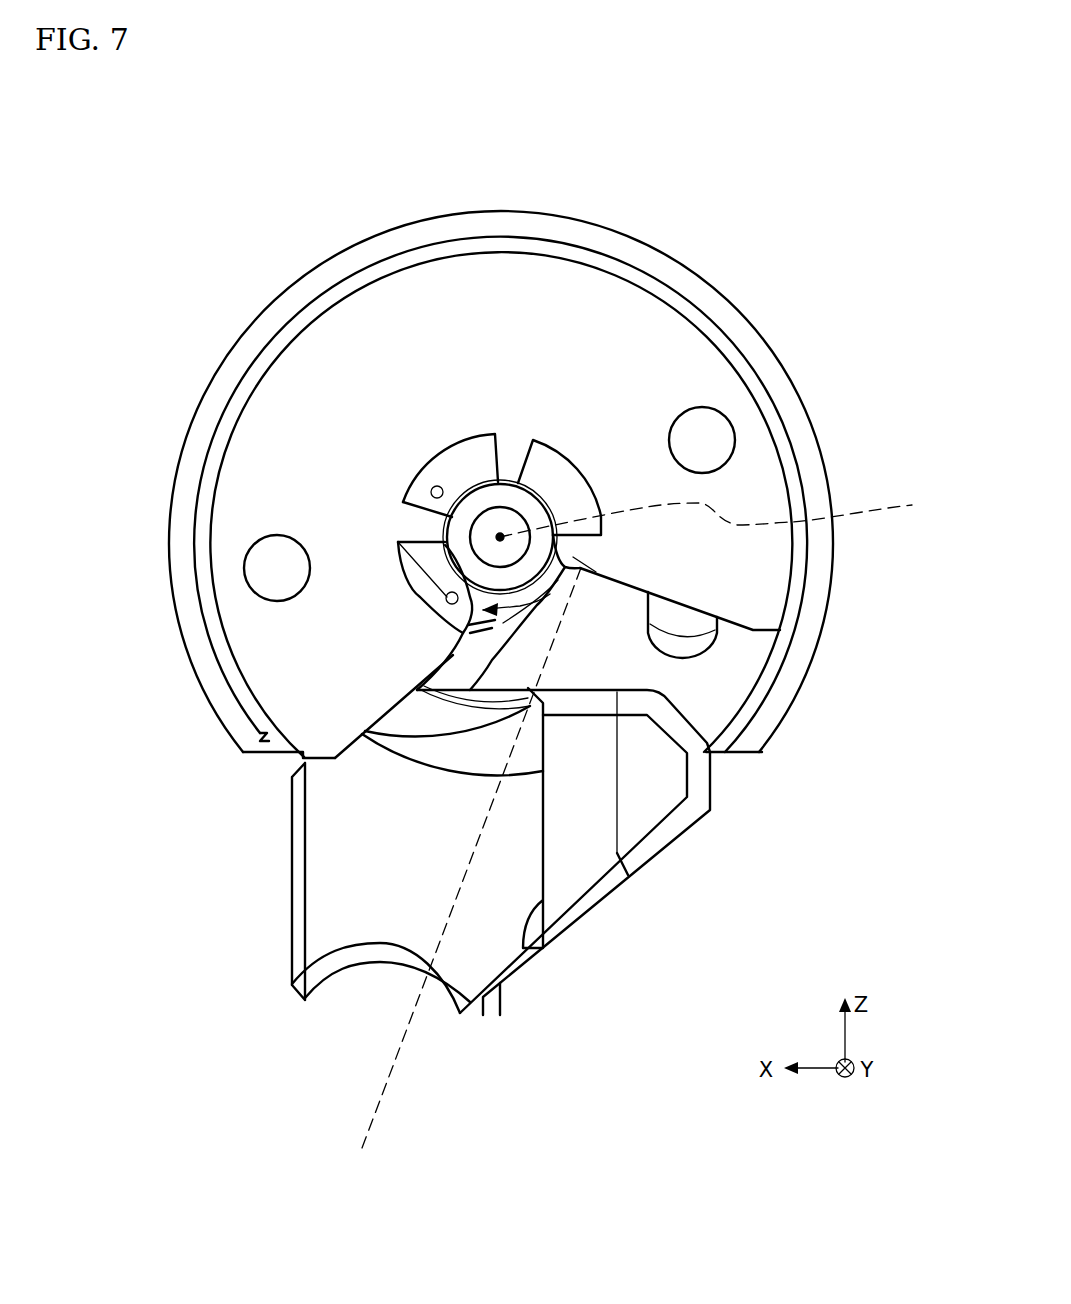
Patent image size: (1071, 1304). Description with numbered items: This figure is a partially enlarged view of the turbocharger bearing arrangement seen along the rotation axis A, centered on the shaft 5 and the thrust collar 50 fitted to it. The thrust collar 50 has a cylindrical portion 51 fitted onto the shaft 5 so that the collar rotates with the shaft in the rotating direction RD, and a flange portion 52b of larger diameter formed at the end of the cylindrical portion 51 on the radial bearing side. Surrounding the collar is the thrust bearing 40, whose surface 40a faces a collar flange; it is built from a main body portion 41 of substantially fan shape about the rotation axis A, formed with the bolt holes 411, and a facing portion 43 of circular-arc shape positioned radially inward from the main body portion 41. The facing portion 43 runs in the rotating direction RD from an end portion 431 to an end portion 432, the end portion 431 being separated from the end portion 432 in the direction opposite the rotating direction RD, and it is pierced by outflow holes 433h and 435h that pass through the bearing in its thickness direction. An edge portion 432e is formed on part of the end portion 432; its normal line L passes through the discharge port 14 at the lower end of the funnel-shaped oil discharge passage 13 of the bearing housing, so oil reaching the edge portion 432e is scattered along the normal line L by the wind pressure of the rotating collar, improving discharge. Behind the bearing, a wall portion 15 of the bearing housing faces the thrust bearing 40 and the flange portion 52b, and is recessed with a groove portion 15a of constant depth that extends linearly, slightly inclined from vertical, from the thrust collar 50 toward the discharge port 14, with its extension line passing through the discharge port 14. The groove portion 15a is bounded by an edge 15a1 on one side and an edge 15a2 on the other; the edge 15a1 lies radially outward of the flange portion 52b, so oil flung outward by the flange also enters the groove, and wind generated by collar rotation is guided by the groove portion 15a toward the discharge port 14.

The shaft 5 is at (505, 523).
The oil discharge passage 13 is at (337, 920).
The discharge port 14 is at (362, 966).
The wall portion 15 is at (615, 657).
The groove portion 15a is at (575, 575).
The edge 15a1 is at (563, 657).
The edge 15a2 is at (498, 623).
The thrust bearing 40 is at (700, 320).
The surface 40a is at (587, 308).
The main body portion 41 is at (623, 300).
The bolt holes 411 is at (268, 537).
The facing portion 43 is at (580, 463).
The end portion 431 is at (463, 617).
The end portion 432 is at (573, 557).
The edge portion 432e is at (593, 568).
The outflow hole 433h is at (433, 487).
The outflow hole 435h is at (475, 484).
The thrust collar 50 is at (480, 482).
The cylindrical portion 51 is at (535, 508).
The flange portion 52b is at (445, 600).
The rotation axis A is at (720, 514).
The normal line L is at (390, 1085).
The rotating direction RD is at (457, 643).